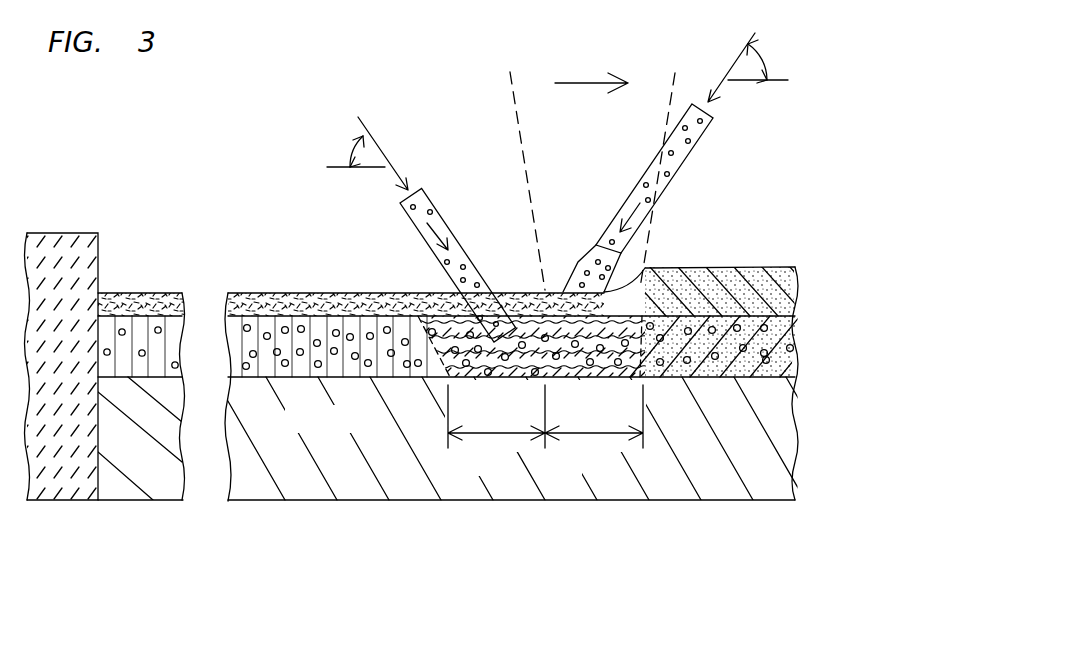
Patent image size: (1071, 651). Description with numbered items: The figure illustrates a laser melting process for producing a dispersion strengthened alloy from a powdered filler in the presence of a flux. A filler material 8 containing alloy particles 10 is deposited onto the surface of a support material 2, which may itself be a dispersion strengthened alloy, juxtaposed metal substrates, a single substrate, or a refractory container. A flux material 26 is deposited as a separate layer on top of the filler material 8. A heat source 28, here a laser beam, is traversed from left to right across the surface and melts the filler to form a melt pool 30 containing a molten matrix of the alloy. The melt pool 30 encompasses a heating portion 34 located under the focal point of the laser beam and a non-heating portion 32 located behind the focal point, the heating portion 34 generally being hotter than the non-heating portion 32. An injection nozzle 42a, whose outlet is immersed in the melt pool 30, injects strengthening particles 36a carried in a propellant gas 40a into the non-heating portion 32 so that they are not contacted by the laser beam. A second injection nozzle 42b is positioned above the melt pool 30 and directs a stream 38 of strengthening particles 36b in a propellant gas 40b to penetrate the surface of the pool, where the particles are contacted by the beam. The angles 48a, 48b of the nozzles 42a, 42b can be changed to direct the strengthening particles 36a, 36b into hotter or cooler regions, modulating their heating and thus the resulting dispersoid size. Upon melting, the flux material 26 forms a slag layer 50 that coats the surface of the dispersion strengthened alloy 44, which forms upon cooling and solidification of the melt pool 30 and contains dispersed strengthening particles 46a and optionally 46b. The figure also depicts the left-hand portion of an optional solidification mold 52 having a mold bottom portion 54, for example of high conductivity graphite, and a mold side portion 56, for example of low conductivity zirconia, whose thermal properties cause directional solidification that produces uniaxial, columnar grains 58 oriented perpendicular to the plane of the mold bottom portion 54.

The support material 2 is at (355, 483).
The filler material 8 is at (780, 338).
The alloy particles 10 is at (772, 361).
The flux material 26 is at (777, 293).
The heat source 28 is at (520, 150).
The melt pool 30 is at (533, 350).
The non-heating portion 32 is at (510, 437).
The heating portion 34 is at (600, 437).
The strengthening particles 36a is at (433, 332).
The strengthening particles 36b is at (644, 183).
The stream 38 is at (583, 255).
The propellant gas 40a is at (432, 242).
The propellant gas 40b is at (633, 217).
The injection nozzle 42a is at (407, 213).
The injection nozzle 42b is at (687, 163).
The dispersion strengthened alloy 44 is at (267, 327).
The dispersed strengthening particles 46a is at (350, 334).
The dispersed strengthening particles 46b is at (368, 367).
The angle 48a is at (365, 134).
The angle 48b is at (758, 50).
The slag layer 50 is at (288, 310).
The solidification mold 52 is at (73, 214).
The mold bottom portion 54 is at (158, 483).
The mold side portion 56 is at (60, 483).
The uniaxial grains 58 is at (277, 356).